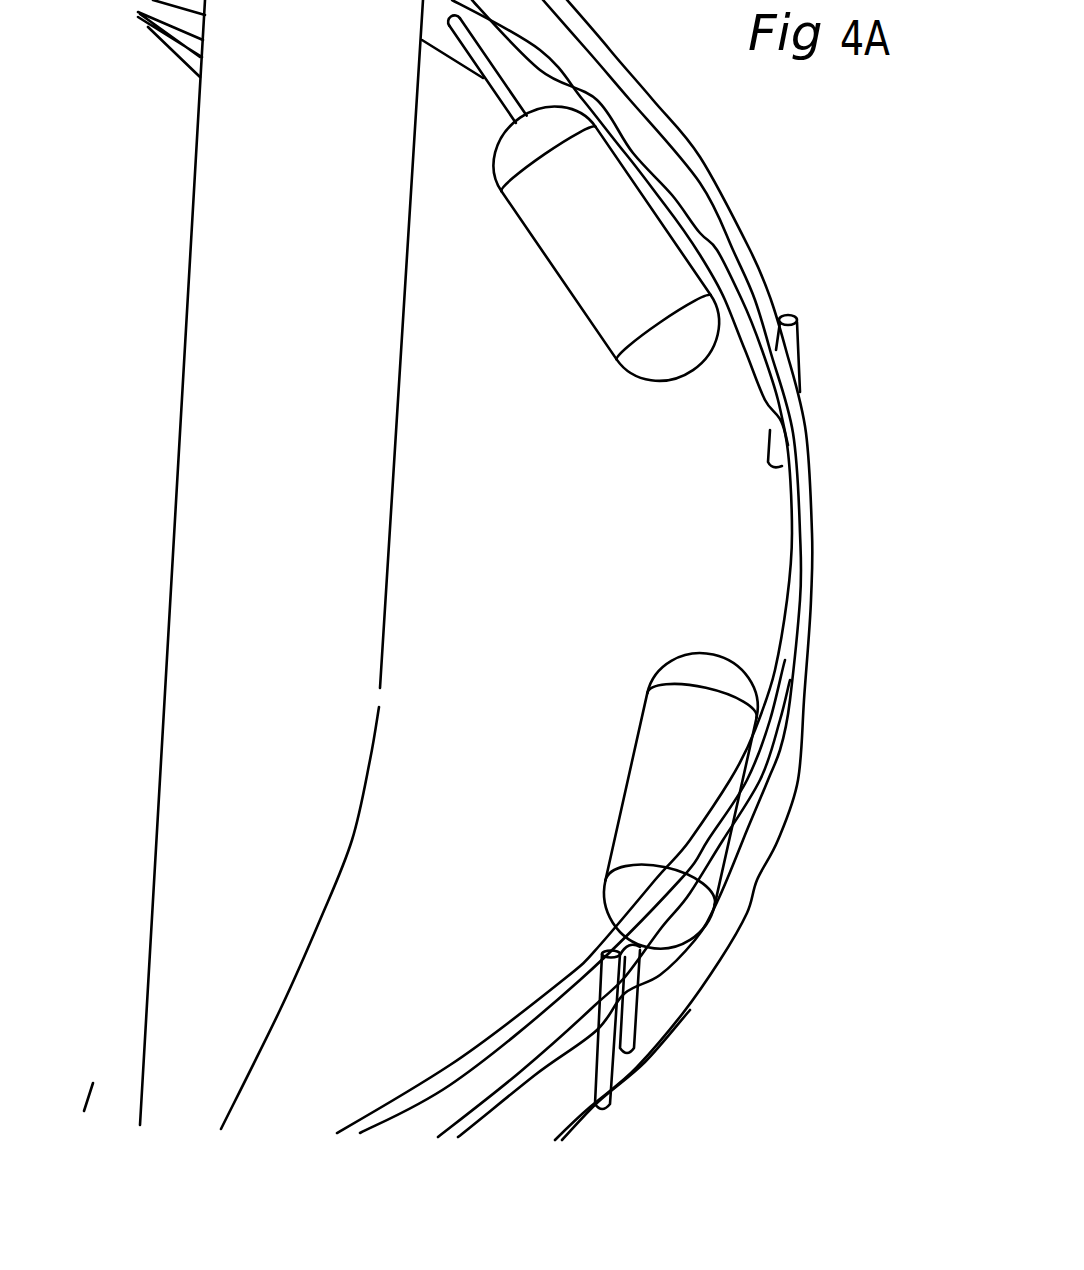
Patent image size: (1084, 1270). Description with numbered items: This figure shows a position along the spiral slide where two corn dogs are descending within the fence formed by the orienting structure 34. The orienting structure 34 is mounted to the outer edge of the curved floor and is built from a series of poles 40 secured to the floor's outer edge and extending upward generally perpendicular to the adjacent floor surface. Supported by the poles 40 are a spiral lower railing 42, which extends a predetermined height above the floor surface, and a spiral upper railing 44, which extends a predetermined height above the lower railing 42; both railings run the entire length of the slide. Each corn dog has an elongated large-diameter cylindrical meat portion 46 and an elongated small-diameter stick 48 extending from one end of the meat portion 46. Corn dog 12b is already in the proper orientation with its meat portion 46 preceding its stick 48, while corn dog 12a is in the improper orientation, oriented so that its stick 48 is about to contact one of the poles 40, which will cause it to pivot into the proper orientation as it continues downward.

The orienting structure 34 is at (812, 433).
The spiral upper railing 44 is at (810, 523).
The spiral lower railing 42 is at (780, 723).
The corn dog 12a is at (630, 760).
The corn dog 12b is at (557, 277).
The meat portion 46 is at (628, 516).
The stick 48 is at (490, 83).
The poles 40 is at (607, 1070).